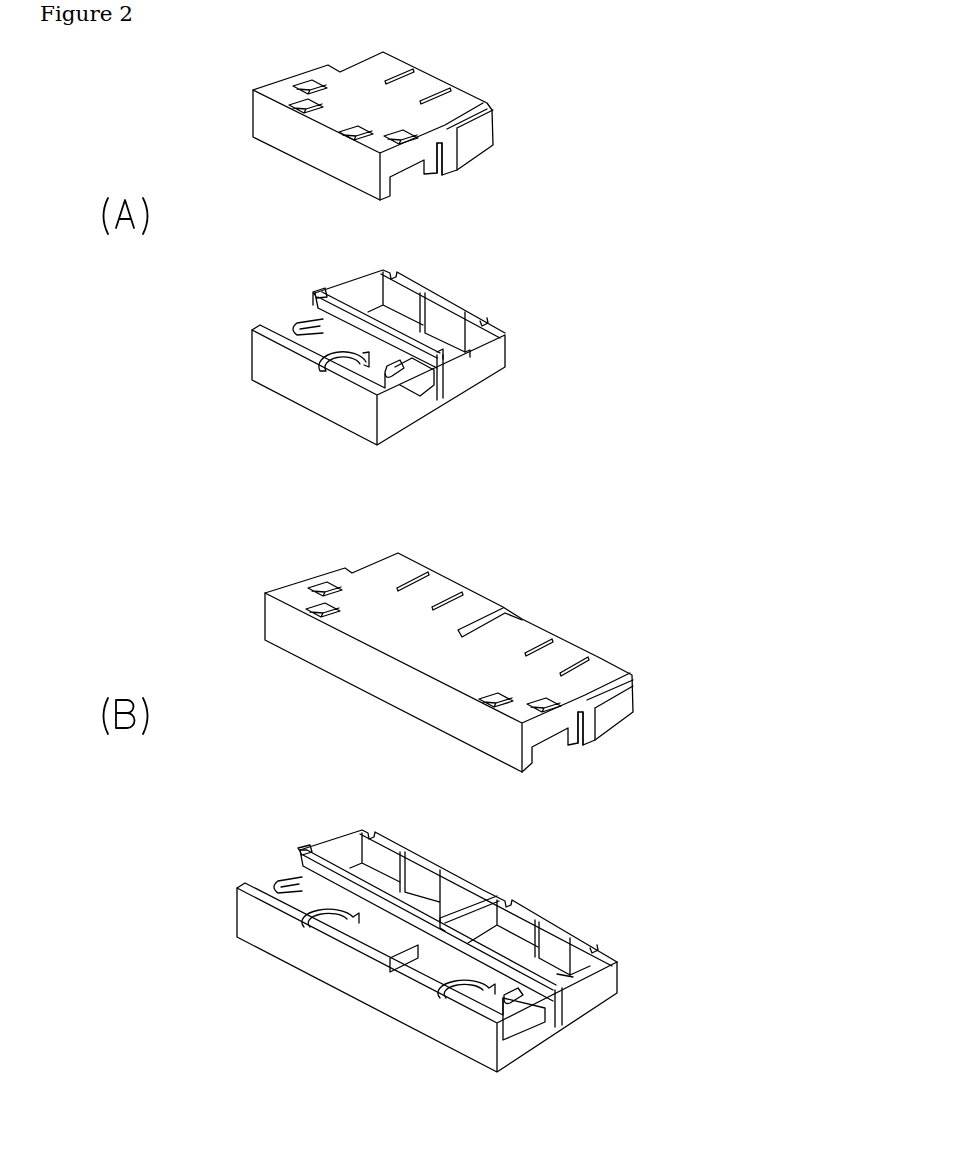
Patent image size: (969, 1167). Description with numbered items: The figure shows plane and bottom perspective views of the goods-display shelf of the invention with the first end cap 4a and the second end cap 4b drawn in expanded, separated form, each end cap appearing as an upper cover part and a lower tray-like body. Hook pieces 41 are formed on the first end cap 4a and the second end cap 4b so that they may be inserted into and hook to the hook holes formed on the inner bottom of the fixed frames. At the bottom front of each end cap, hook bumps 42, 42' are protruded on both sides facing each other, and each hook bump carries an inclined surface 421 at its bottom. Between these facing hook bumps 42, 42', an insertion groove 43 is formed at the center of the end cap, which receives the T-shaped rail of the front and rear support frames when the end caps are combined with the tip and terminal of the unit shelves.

The hook piece 41 is at (425, 78).
The hook bump 42 is at (519, 590).
The hook bump 42' is at (254, 593).
The inclined surface 421 is at (322, 362).
The insertion groove 43 is at (412, 377).
The No.1 end cap 4a is at (503, 155).
The No.2 end cap 4b is at (619, 766).